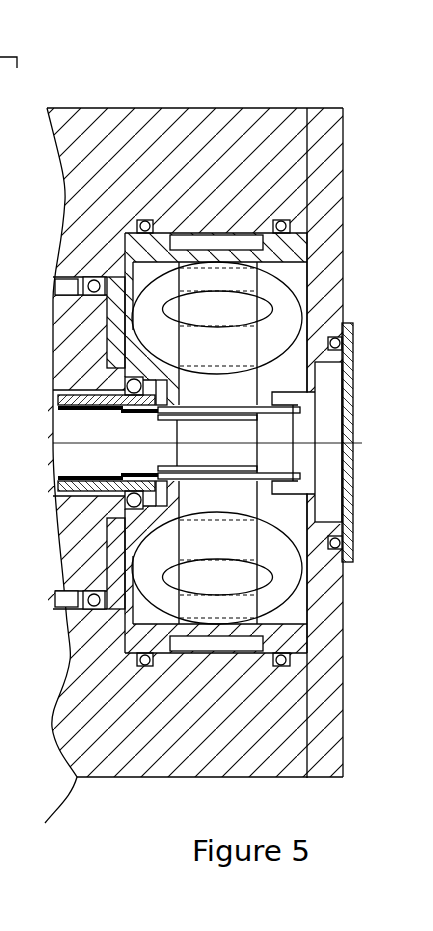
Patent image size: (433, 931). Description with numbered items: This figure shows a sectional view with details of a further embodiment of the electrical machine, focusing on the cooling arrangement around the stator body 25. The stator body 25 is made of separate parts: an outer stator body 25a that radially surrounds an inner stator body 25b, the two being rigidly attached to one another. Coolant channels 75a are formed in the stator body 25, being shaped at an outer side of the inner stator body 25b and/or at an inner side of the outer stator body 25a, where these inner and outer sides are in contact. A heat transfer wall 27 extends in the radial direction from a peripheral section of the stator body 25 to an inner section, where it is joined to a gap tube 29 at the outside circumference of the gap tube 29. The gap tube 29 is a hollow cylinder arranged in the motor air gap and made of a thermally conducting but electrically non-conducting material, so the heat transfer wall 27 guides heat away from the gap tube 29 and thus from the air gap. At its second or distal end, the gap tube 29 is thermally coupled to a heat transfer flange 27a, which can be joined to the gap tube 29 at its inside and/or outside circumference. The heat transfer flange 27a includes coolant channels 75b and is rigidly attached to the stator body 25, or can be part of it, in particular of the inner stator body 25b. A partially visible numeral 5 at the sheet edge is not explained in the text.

The stator body 25 is at (187, 67).
The outer stator body 25a is at (207, 178).
The inner stator body 25b is at (268, 243).
The heat transfer wall 27 is at (113, 345).
The heat transfer flange 27a is at (303, 401).
The gap tube 29 is at (258, 410).
The coolant channels 75a is at (205, 238).
The coolant channels 75b is at (327, 433).
The axis 5 is at (181, 433).